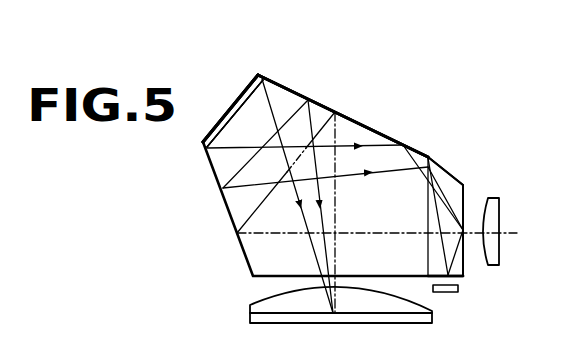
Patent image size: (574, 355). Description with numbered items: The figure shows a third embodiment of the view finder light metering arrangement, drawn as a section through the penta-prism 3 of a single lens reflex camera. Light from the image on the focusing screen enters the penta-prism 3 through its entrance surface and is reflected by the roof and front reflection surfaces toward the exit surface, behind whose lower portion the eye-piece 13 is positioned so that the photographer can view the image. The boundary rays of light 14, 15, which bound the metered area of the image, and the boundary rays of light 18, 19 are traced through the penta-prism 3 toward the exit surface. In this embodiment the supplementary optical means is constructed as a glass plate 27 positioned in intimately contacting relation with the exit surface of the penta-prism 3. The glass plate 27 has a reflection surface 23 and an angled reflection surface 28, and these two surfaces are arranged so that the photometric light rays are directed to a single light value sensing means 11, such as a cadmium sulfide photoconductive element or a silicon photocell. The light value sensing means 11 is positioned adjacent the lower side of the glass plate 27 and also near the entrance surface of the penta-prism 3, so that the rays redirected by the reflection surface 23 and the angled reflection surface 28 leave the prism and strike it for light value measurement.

The pentaprism 3 is at (364, 125).
The first light value sensing means 11 is at (449, 293).
The eye-piece 13 is at (497, 213).
The boundary ray of light 14 is at (324, 110).
The boundary ray of light 15 is at (318, 108).
The boundary ray of light 18 is at (277, 88).
The boundary ray of light 19 is at (268, 74).
The reflection surface 23 is at (464, 273).
The glass plate 27 is at (453, 193).
The angled reflection surface 28 is at (452, 168).